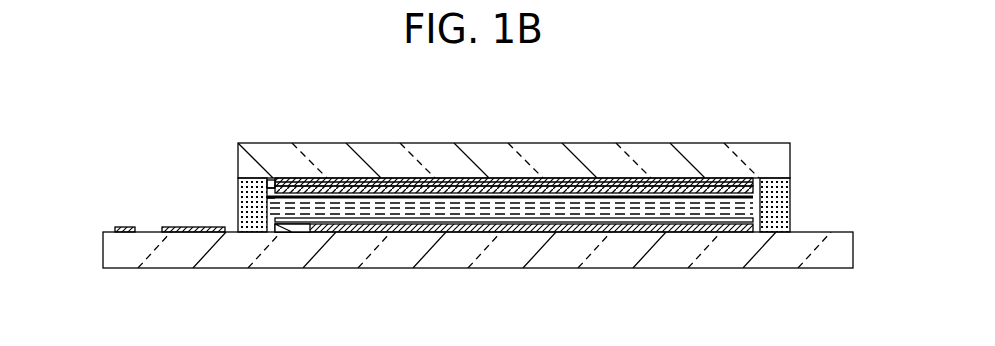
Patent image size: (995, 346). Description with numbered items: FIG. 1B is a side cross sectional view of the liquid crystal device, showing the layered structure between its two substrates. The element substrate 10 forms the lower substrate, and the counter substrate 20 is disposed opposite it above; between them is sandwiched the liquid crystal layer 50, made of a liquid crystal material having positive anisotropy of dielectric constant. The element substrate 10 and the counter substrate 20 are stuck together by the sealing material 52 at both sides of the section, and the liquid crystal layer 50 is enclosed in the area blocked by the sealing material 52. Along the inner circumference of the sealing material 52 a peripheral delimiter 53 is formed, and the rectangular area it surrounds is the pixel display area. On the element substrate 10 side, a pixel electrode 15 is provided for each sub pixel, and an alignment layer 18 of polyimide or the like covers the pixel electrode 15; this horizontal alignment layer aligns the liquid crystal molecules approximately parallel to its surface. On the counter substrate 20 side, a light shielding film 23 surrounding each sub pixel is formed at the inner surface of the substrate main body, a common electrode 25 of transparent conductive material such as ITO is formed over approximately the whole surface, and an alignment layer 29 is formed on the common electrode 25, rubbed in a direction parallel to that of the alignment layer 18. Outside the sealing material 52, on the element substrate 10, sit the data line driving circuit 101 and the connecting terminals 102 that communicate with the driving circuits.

The element substrate 10 is at (545, 255).
The pixel electrode 15 is at (467, 232).
The alignment layer 18 is at (737, 232).
The counter substrate 20 is at (487, 152).
The light shielding film 23 is at (370, 178).
The common electrode 25 is at (590, 186).
The alignment layer 29 is at (710, 180).
The liquid crystal layer 50 is at (302, 212).
The sealing material 52 is at (247, 197).
The peripheral delimiter 53 is at (294, 178).
The data line driving circuit 101 is at (180, 227).
The connecting terminals 102 is at (127, 227).